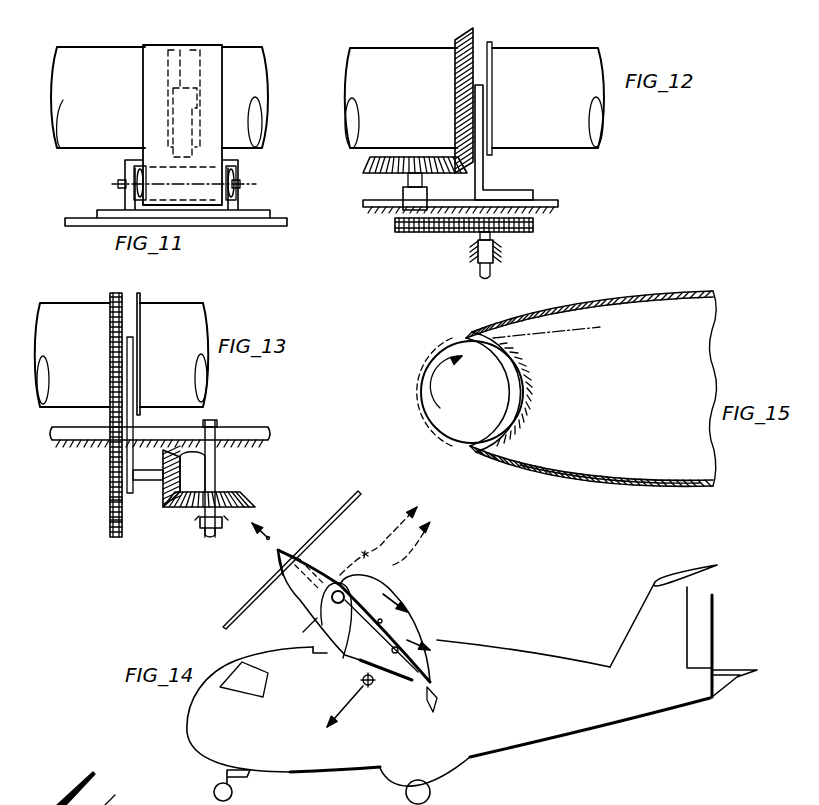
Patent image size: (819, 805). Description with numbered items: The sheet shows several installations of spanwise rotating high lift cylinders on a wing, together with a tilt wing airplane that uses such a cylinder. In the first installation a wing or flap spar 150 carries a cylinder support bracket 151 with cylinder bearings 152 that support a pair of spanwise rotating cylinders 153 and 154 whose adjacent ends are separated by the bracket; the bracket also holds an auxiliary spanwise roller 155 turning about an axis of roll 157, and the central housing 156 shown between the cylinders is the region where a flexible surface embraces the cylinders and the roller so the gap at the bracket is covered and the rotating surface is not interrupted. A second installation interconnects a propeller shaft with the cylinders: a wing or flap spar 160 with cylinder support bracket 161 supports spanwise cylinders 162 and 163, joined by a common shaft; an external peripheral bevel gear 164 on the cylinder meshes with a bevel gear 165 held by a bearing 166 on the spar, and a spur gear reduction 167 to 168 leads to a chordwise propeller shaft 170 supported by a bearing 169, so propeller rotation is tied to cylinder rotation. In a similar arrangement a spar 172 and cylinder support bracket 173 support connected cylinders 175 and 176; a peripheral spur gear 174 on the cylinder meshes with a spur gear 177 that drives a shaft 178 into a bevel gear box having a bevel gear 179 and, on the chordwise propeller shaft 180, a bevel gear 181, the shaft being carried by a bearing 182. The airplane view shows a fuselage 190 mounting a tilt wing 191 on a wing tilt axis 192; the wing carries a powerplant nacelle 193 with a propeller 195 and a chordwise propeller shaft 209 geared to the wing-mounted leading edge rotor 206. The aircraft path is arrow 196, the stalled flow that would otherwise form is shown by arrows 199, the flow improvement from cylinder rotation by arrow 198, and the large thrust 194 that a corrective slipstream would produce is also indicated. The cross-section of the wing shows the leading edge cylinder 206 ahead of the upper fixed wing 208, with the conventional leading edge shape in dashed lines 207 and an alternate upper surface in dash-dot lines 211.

In FIG. 11, the wing or flap spar 150 is at (78, 218).
In FIG. 11, the cylinder support bracket 151 is at (238, 170).
In FIG. 11, the cylinder bearings 152 is at (183, 46).
In FIG. 11, the spanwise rotating cylinder 153 is at (80, 52).
In FIG. 11, the spanwise rotating cylinder 154 is at (242, 50).
In FIG. 11, the auxiliary spanwise roller 155 is at (134, 176).
In FIG. 11, the housing block 156 is at (142, 60).
In FIG. 11, the axis of roll 157 is at (112, 184).
In FIG. 12, the wing or flap spar 160 is at (545, 202).
In FIG. 12, the cylinder support bracket 161 is at (483, 183).
In FIG. 12, the spanwise cylinder 162 is at (398, 48).
In FIG. 12, the spanwise cylinder 163 is at (535, 52).
In FIG. 12, the external peripheral bevel gear 164 is at (470, 45).
In FIG. 12, the bevel gear 165 is at (372, 160).
In FIG. 12, the bearing 166 is at (403, 195).
In FIG. 12, the spur gear 167 is at (395, 226).
In FIG. 12, the spur gear 168 is at (456, 233).
In FIG. 12, the bearing 169 is at (497, 250).
In FIG. 12, the chordwise propeller shaft 170 is at (492, 275).
In FIG. 13, the wing or flap spar 172 is at (255, 432).
In FIG. 13, the cylinder support bracket 173 is at (131, 337).
In FIG. 13, the peripheral spur gear 174 is at (112, 295).
In FIG. 13, the spanwise rotating cylinder 175 is at (66, 305).
In FIG. 13, the spanwise rotating cylinder 176 is at (200, 327).
In FIG. 13, the spur gear 177 is at (110, 512).
In FIG. 13, the shaft 178 is at (145, 482).
In FIG. 13, the bevel gear 179 is at (190, 452).
In FIG. 13, the chordwise propeller shaft 180 is at (214, 478).
In FIG. 13, the bevel gear 181 is at (245, 500).
In FIG. 13, the bearing 182 is at (200, 526).
In FIG. 14, the fuselage 190 is at (490, 647).
In FIG. 15, the tilt wing 191 is at (590, 476).
In FIG. 14, the tilt wing 191 is at (382, 621).
In FIG. 14, the wing tilt axis 192 is at (417, 660).
In FIG. 14, the powerplant nacelle 193 is at (322, 572).
In FIG. 14, the thrust 194 is at (265, 547).
In FIG. 14, the propeller 195 is at (240, 613).
In FIG. 14, the aircraft path arrow 196 is at (352, 702).
In FIG. 14, the flow improvement arrow 198 is at (383, 596).
In FIG. 14, the stalled wing flow arrows 199 is at (404, 509).
In FIG. 15, the leading edge rotor 206 is at (450, 432).
In FIG. 14, the leading edge rotor 206 is at (343, 658).
In FIG. 15, the NACA 23018 leading edge shape 207 is at (416, 382).
In FIG. 15, the upper fixed wing 208 is at (466, 340).
In FIG. 14, the chordwise propeller shaft 209 is at (320, 590).
In FIG. 15, the alternate wing upper surface 211 is at (562, 332).